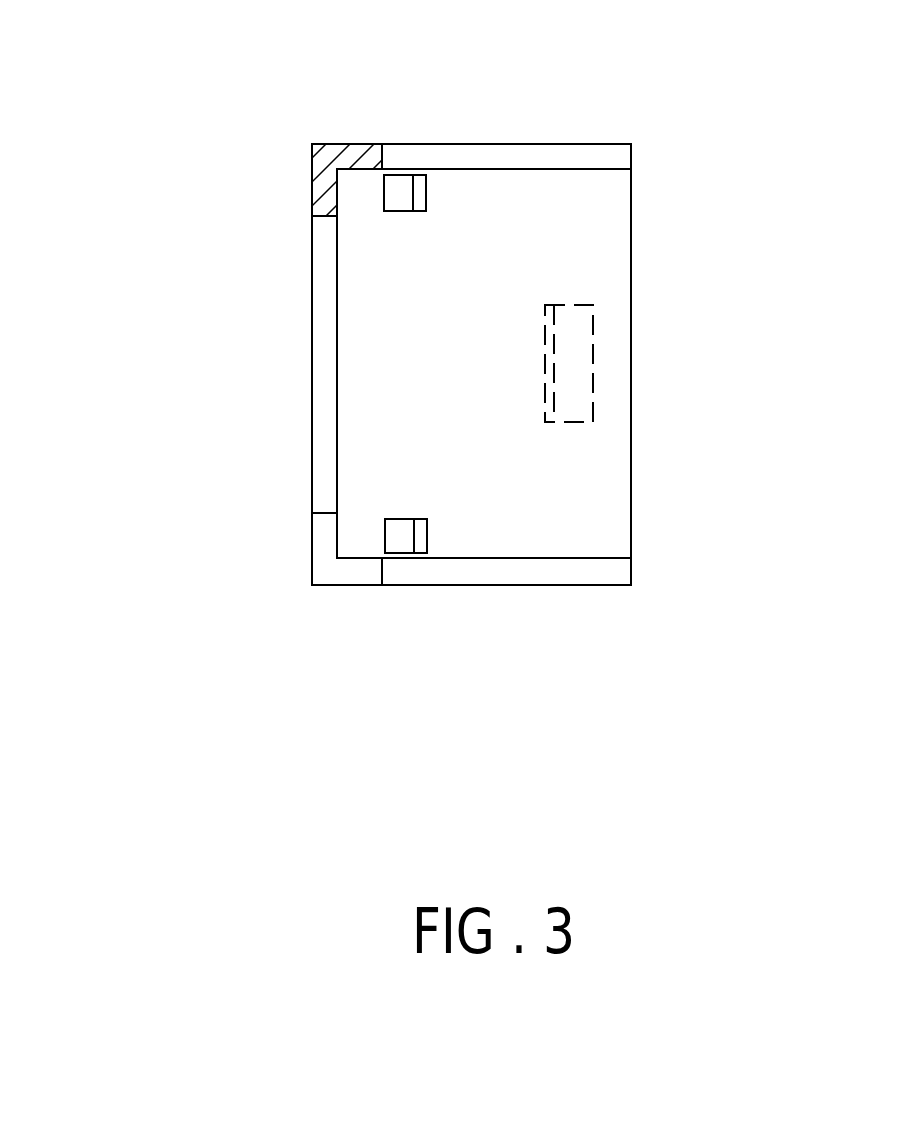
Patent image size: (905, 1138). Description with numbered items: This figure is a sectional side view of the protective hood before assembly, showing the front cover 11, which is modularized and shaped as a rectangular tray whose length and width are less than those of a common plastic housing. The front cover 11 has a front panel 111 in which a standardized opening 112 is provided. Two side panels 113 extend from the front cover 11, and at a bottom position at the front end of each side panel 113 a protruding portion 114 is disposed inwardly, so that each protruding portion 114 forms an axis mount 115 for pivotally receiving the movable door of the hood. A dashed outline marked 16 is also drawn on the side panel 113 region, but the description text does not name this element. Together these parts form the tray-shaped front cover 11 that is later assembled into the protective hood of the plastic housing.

The front cover 11 is at (293, 134).
The front panel 111 is at (333, 537).
The standardized opening 112 is at (330, 276).
The side panels 113 is at (540, 494).
The protruding portion 114 is at (421, 183).
The axis mount 115 is at (363, 533).
The positioning member 16 is at (582, 372).